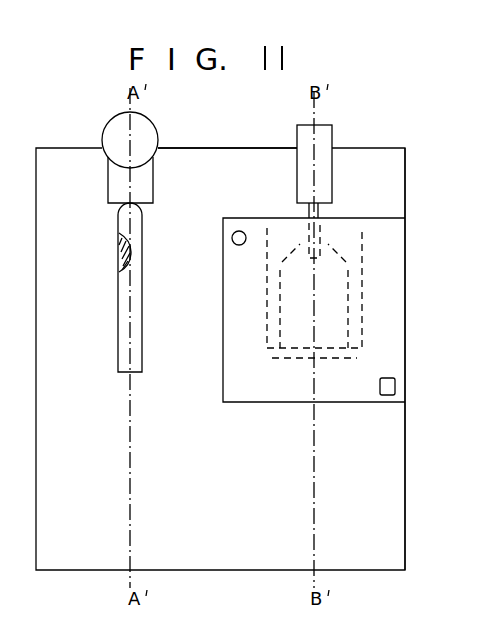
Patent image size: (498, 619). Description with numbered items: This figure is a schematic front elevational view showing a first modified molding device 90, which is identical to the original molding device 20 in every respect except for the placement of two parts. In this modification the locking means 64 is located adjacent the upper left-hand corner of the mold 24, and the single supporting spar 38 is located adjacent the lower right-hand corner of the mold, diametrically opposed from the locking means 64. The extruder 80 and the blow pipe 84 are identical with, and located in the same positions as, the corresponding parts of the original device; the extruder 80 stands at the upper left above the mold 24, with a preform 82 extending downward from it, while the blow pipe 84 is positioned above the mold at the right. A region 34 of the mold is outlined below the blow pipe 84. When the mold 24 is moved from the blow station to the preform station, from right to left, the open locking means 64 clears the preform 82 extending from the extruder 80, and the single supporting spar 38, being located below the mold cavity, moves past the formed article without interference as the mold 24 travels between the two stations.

The molding device 20 is at (86, 143).
The first modified molding device 90 is at (232, 147).
The extruder 80 is at (202, 159).
The preform 82 is at (185, 211).
The blow pipe 84 is at (377, 182).
The mold 24 is at (452, 214).
The compartment 34 is at (252, 395).
The locking means 64 is at (242, 231).
The supporting spar 38 is at (448, 381).